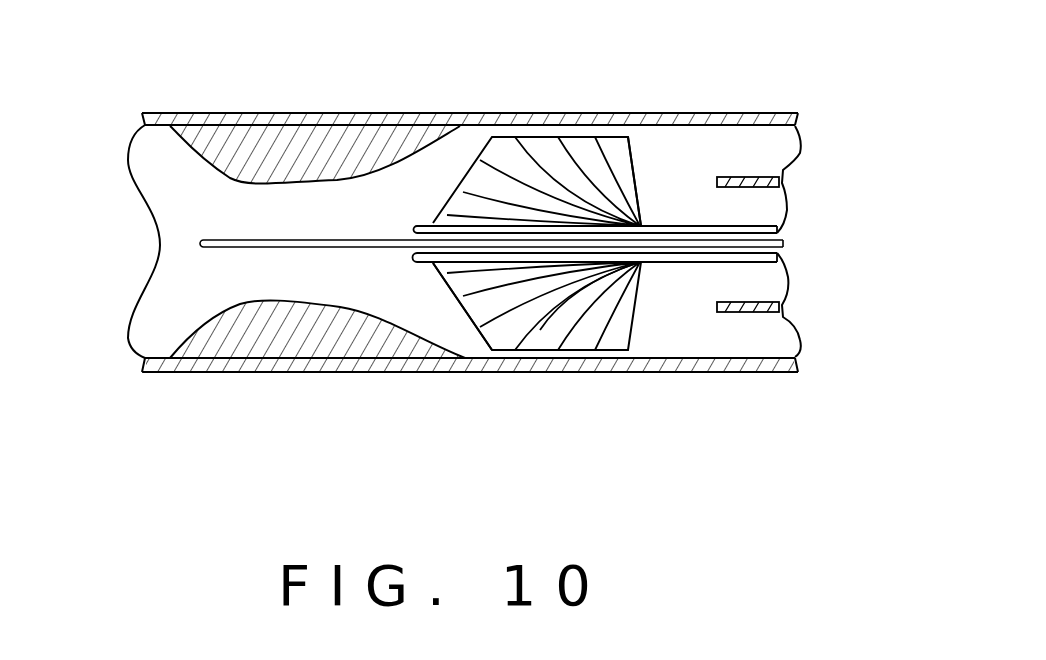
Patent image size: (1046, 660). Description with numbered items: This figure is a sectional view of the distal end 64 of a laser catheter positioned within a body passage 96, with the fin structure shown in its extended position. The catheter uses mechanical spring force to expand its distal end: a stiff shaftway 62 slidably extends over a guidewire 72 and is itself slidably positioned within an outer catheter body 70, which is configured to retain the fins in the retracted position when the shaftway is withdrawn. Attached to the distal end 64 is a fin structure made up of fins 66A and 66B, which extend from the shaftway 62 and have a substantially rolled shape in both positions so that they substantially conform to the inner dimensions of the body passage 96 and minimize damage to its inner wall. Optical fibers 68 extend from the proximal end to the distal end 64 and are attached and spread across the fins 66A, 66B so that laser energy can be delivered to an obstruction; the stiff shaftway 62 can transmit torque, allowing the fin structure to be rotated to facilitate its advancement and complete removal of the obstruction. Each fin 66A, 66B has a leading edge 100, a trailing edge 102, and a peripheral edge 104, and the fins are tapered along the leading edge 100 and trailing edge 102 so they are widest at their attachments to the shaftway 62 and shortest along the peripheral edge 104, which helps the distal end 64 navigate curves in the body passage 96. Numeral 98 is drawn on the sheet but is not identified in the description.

The stiff shaftway 62 is at (682, 226).
The distal end 64 is at (543, 125).
The fin 66A is at (615, 153).
The fin 66B is at (612, 327).
The optical fibers 68 is at (557, 303).
The outer catheter body 70 is at (745, 177).
The guidewire 72 is at (299, 241).
The body passage 96 is at (243, 272).
The plaque 98 is at (315, 332).
The leading edge 100 is at (462, 318).
The trailing edge 102 is at (637, 158).
The peripheral edge 104 is at (527, 357).